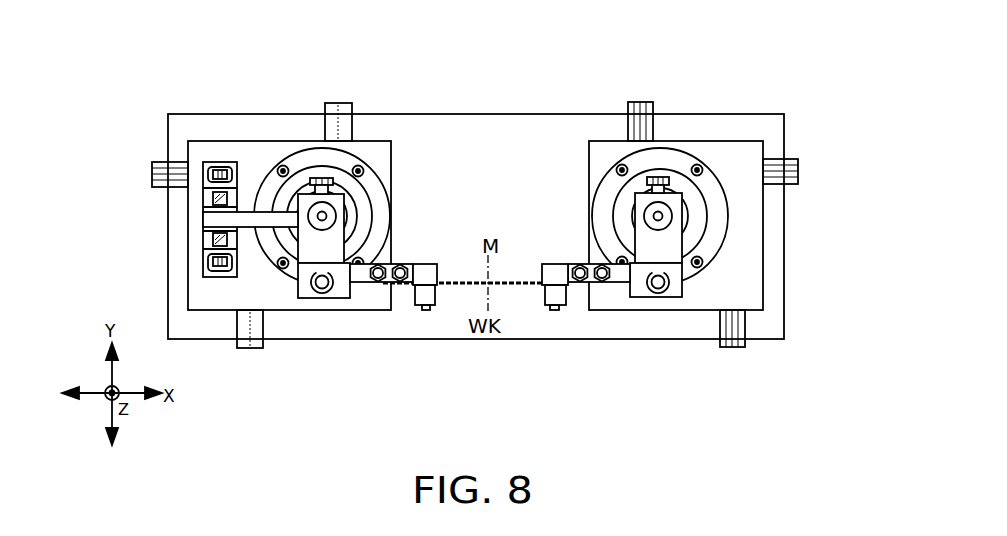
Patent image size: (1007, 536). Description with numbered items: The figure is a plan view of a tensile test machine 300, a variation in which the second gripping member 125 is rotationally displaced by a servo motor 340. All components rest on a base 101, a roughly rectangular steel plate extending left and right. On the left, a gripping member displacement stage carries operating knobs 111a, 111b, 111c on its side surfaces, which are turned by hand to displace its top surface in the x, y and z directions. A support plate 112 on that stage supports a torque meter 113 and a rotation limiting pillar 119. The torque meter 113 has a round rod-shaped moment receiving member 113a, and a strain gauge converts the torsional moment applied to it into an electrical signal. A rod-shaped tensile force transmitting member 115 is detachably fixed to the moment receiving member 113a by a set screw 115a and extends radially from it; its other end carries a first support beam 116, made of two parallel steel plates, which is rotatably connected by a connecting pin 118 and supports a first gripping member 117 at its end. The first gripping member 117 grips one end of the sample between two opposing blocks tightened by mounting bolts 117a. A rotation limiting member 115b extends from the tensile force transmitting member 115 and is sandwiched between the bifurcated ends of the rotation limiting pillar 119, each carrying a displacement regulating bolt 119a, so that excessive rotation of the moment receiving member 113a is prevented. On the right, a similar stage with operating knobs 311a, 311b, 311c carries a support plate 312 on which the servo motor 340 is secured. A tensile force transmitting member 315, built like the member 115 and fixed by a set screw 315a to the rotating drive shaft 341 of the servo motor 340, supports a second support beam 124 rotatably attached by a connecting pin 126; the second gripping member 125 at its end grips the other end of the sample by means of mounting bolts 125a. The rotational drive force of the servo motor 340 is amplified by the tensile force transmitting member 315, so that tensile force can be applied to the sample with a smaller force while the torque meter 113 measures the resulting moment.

The tensile test machine 300 is at (172, 73).
The base 101 is at (479, 113).
The operating knob 111a is at (249, 348).
The operating knob 111b is at (152, 173).
The operating knob 111c is at (337, 103).
The support plate 112 is at (205, 312).
The torque meter 113 is at (346, 175).
The moment receiving member 113a is at (333, 205).
The tensile force transmitting member 115 is at (272, 240).
The set screw 115a is at (320, 178).
The rotation limiting member 115b is at (253, 205).
The first support beam 116 is at (366, 283).
The first gripping member 117 is at (427, 264).
The mounting bolt 117a is at (426, 310).
The connecting pin 118 is at (322, 298).
The rotation limiting pillar 119 is at (203, 231).
The displacement regulating bolt 119a is at (212, 161).
The second support beam 124 is at (608, 283).
The second gripping member 125 is at (548, 264).
The mounting bolt 125a is at (555, 310).
The connecting pin 126 is at (658, 297).
The operating knob 311a is at (732, 347).
The operating knob 311b is at (798, 173).
The operating knob 311c is at (641, 102).
The support plate 312 is at (589, 155).
The tensile force transmitting member 315 is at (683, 236).
The set screw 315a is at (660, 177).
The servo motor 340 is at (699, 186).
The rotating drive shaft 341 is at (648, 205).